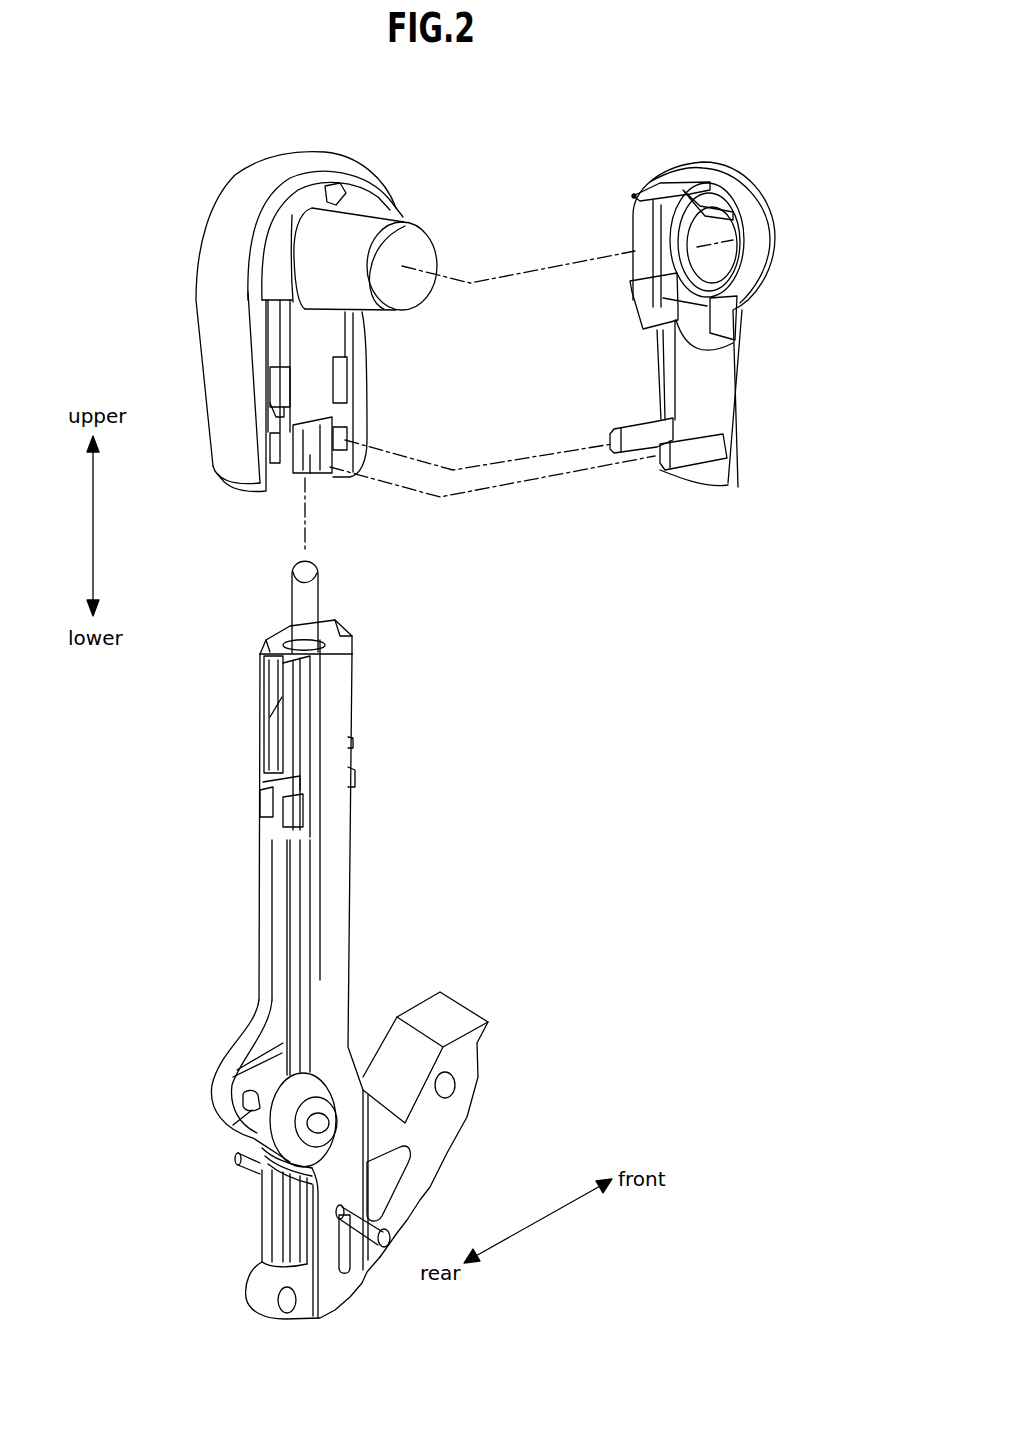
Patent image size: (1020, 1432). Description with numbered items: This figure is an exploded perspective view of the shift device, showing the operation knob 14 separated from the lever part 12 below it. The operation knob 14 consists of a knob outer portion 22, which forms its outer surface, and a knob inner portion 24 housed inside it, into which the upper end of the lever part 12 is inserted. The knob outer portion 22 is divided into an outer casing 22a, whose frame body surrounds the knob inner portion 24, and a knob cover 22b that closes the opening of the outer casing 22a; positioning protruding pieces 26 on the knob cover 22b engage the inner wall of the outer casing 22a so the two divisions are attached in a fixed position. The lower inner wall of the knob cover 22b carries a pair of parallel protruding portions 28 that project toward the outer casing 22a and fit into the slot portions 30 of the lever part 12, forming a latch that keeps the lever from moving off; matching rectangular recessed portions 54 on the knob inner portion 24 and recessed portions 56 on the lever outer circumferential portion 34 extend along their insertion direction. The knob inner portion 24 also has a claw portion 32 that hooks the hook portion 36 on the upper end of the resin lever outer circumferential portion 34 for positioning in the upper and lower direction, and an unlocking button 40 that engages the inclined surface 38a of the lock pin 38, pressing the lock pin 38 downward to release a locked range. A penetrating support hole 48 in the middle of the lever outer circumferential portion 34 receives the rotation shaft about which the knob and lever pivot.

The lever part 12 is at (237, 932).
The operation knob 14 is at (182, 266).
The knob outer portion 22 is at (715, 108).
The outer casing 22a is at (312, 164).
The knob cover 22b is at (658, 168).
The knob inner portion 24 is at (315, 385).
The positioning protruding pieces 26 is at (650, 196).
The protruding portions 28 is at (648, 421).
The slot portions 30 is at (253, 775).
The claw portion 32 is at (268, 410).
The lever outer circumferential portion 34 is at (330, 833).
The hook portion 36 is at (283, 737).
The lock pin 38 is at (312, 608).
The inclined surface 38a is at (312, 574).
The unlocking button 40 is at (398, 250).
The support hole 48 is at (305, 1176).
The recessed portions 54 is at (273, 450).
The recessed portions 56 is at (280, 794).